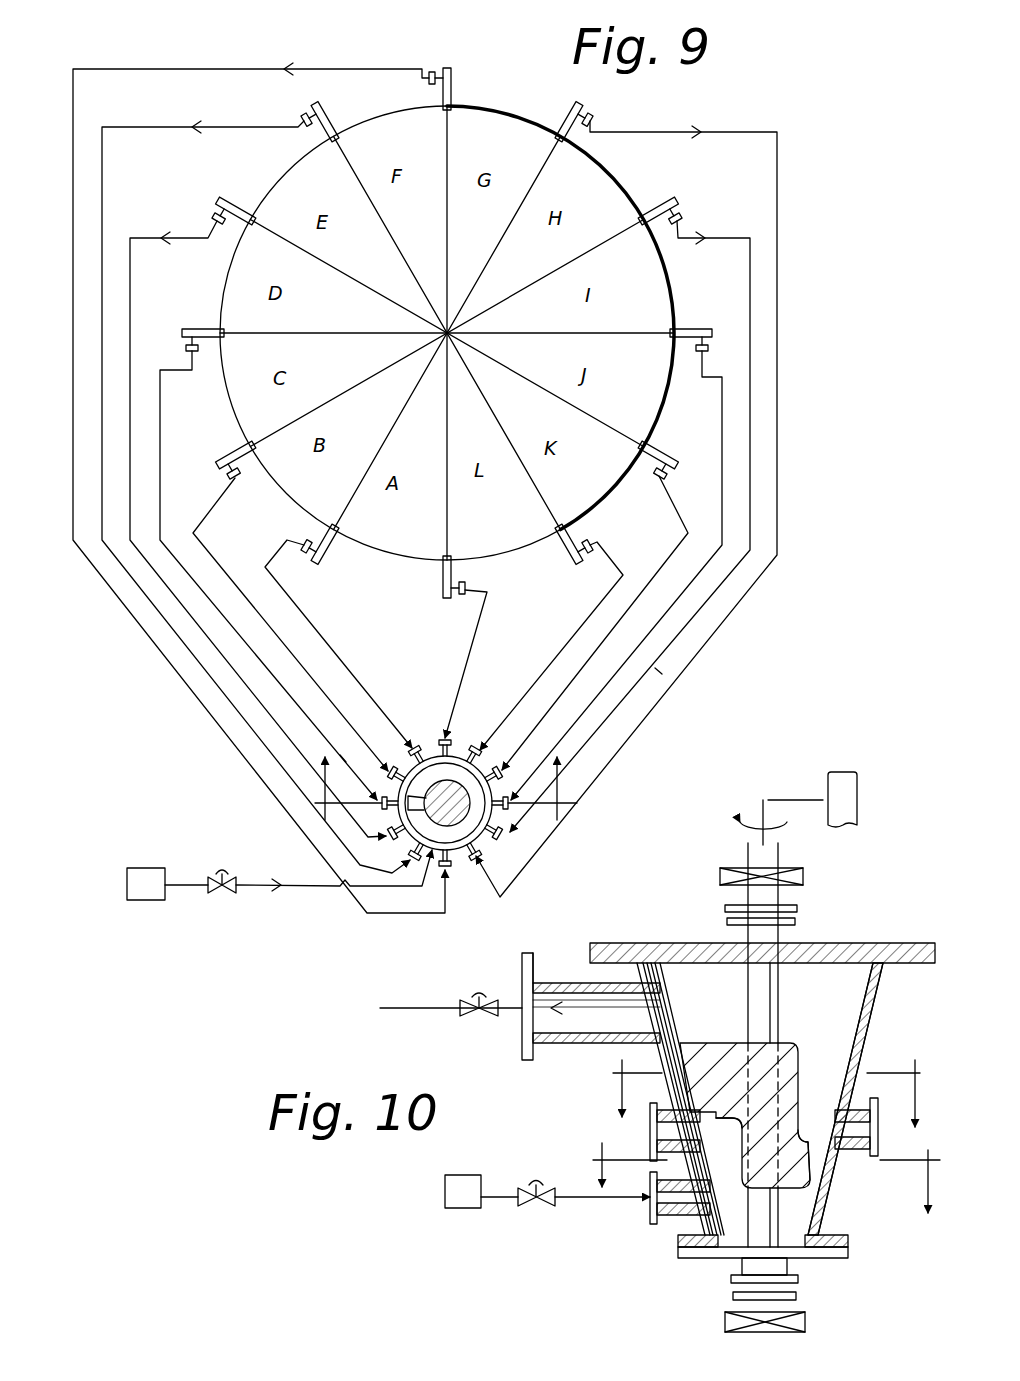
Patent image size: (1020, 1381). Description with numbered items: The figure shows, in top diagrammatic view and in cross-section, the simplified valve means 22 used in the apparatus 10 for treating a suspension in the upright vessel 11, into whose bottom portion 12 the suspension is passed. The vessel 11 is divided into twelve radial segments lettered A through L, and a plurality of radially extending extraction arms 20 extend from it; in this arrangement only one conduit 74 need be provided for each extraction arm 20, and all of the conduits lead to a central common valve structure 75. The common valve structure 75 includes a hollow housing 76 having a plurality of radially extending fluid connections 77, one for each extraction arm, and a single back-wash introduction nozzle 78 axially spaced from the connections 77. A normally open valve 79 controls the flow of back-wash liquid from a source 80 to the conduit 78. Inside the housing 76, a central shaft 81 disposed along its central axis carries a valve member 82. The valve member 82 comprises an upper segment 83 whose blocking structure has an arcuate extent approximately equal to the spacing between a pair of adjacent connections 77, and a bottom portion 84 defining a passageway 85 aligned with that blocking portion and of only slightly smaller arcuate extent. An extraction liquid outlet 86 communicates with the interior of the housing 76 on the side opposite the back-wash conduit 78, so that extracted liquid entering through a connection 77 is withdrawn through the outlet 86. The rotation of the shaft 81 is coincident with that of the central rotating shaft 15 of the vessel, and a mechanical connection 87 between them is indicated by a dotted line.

In FIG. 9, the apparatus for treating a suspension 10 is at (446, 797).
In FIG. 10, the vessel 11 is at (768, 1083).
In FIG. 10, the bottom portion 12 is at (764, 1170).
In FIG. 10, the central rotating shaft 15 is at (857, 790).
In FIG. 9, the extraction arms 20 is at (228, 204).
In FIG. 9, the valve means 22 is at (112, 707).
In FIG. 9, the conduit 74 is at (226, 235).
In FIG. 9, the common valve structure 75 is at (424, 728).
In FIG. 10, the common valve structure 75 is at (856, 920).
In FIG. 10, the hollow housing 76 is at (878, 990).
In FIG. 9, the fluid connections 77 is at (448, 740).
In FIG. 10, the fluid connections 77 is at (668, 1104).
In FIG. 10, the back-wash introduction nozzle 78 is at (660, 1216).
In FIG. 9, the valve 79 is at (232, 903).
In FIG. 10, the valve 79 is at (530, 1208).
In FIG. 9, the source 80 is at (127, 878).
In FIG. 10, the source 80 is at (445, 1183).
In FIG. 10, the central shaft 81 is at (779, 988).
In FIG. 10, the valve member 82 is at (720, 1036).
In FIG. 10, the upper segment 83 is at (748, 1078).
In FIG. 10, the bottom portion 84 is at (810, 1135).
In FIG. 10, the passageway 85 is at (736, 1116).
In FIG. 10, the extraction liquid outlet 86 is at (555, 985).
In FIG. 10, the mechanical connection 87 is at (806, 800).